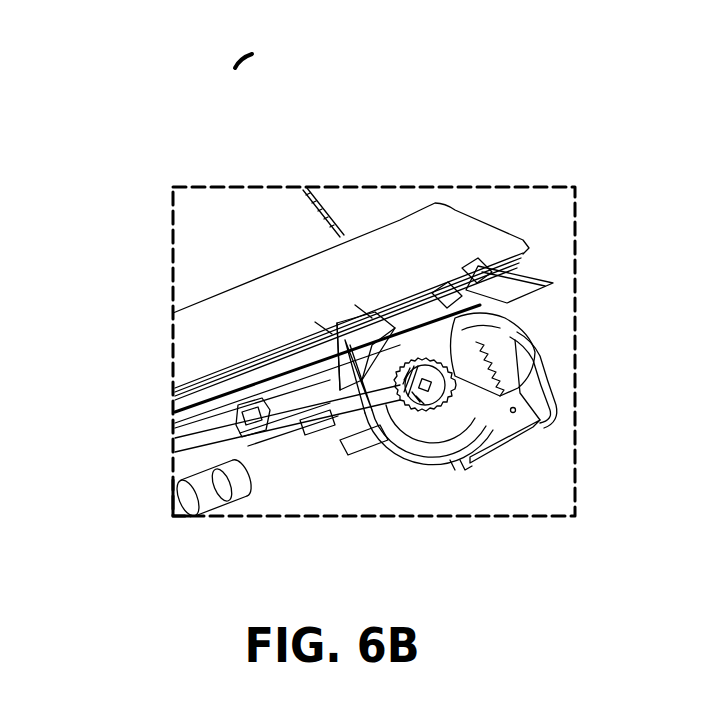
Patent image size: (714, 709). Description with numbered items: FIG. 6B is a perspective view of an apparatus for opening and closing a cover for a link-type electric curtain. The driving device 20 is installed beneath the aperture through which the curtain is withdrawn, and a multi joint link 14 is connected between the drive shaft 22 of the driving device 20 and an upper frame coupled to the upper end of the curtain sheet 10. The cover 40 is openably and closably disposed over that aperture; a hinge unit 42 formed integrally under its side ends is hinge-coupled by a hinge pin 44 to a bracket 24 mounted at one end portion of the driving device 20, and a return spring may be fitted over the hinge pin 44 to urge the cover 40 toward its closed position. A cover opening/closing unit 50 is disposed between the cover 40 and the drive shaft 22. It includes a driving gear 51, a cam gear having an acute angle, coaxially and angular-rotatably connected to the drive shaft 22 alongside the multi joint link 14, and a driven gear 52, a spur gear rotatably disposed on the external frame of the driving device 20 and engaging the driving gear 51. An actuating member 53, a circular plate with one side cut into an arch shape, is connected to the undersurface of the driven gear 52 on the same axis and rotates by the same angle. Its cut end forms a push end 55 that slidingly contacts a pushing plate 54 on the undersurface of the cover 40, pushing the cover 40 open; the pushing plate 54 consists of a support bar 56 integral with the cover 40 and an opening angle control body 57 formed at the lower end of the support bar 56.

The curtain sheet 10 is at (232, 200).
The multi joint link 14 is at (365, 255).
The driving device 20 is at (173, 492).
The drive shaft 22 is at (530, 318).
The bracket 24 is at (533, 262).
The cover 40 is at (218, 292).
The hinge unit 42 is at (452, 282).
The hinge pin 44 is at (470, 268).
The cover opening/closing unit 50 is at (440, 455).
The driving gear 51 is at (540, 427).
The driven gear 52 is at (425, 405).
The actuating member 53 is at (510, 460).
The pushing plate 54 is at (231, 52).
The push end 55 is at (413, 290).
The support bar 56 is at (363, 310).
The opening angle control body 57 is at (323, 327).